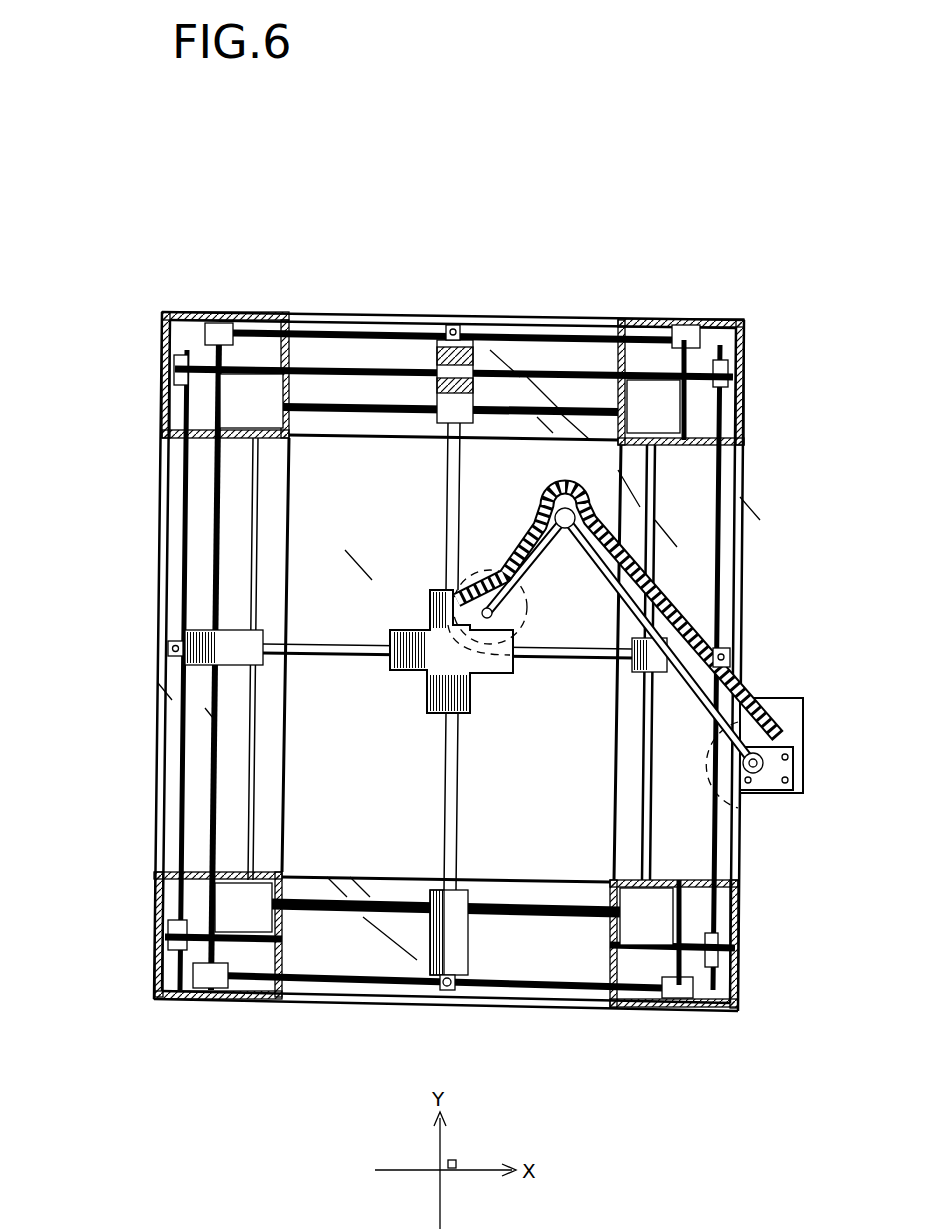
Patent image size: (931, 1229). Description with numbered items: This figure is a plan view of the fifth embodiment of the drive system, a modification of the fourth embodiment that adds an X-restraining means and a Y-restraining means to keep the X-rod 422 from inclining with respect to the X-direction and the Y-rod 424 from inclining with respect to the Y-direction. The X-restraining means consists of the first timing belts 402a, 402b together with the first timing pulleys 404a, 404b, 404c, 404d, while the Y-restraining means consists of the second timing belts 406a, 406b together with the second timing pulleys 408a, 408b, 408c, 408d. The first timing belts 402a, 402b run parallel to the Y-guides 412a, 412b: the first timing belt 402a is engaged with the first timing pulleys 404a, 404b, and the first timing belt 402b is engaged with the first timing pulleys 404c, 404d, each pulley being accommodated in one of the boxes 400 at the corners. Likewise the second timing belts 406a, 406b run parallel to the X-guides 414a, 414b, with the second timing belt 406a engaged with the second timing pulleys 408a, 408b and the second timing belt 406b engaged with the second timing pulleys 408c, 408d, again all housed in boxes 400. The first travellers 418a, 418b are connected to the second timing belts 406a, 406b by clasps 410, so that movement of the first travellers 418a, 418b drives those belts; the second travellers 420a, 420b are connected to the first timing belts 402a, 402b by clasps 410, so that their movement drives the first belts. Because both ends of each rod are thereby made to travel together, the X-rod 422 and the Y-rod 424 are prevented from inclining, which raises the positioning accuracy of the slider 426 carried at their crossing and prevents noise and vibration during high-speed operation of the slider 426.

The box 400 is at (243, 348).
The first timing belt 402a is at (725, 515).
The first timing belt 402b is at (172, 818).
The first timing pulley 404a is at (760, 352).
The first timing pulley 404b is at (742, 922).
The first timing pulley 404c is at (197, 322).
The first timing pulley 404d is at (170, 958).
The second timing belt 406a is at (536, 335).
The second timing belt 406b is at (600, 1002).
The second timing pulley 408a is at (652, 350).
The second timing pulley 408b is at (237, 345).
The second timing pulley 408c is at (680, 992).
The second timing pulley 408d is at (240, 962).
The clasp 410 is at (456, 328).
The Y-guide 412a is at (655, 848).
The Y-guide 412b is at (245, 515).
The X-guide 414a is at (345, 405).
The X-guide 414b is at (335, 920).
The first traveller 418a is at (440, 420).
The first traveller 418b is at (436, 885).
The second traveller 420a is at (745, 640).
The second traveller 420b is at (205, 667).
The X-rod 422 is at (520, 668).
The Y-rod 424 is at (440, 536).
The slider 426 is at (420, 686).